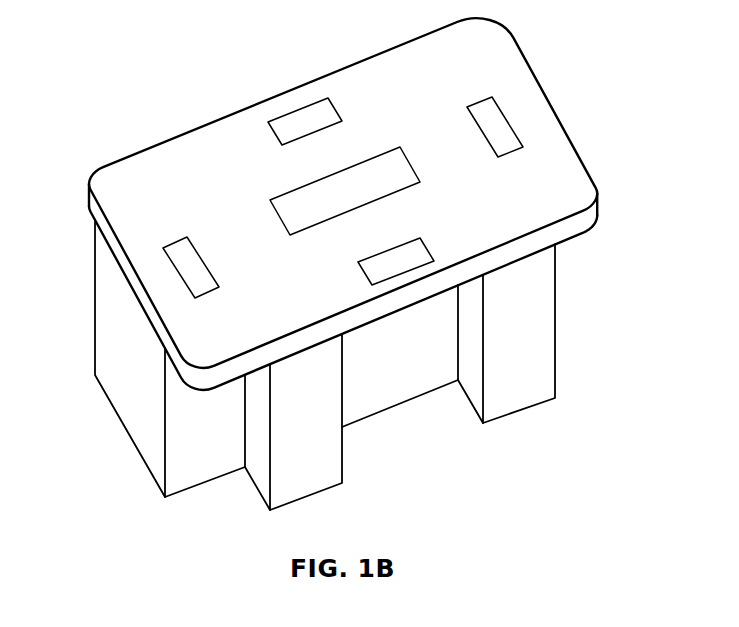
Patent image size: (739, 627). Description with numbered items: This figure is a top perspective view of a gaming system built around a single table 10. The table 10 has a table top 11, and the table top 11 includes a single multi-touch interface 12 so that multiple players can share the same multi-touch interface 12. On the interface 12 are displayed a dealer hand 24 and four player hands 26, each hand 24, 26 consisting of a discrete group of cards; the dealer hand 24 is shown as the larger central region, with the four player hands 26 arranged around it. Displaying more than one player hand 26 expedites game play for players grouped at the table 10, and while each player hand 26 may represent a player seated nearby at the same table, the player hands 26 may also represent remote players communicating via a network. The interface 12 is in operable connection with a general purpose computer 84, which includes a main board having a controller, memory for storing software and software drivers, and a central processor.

The table 10 is at (542, 20).
The table top 11 is at (479, 207).
The multi-touch interface 12 is at (392, 78).
The dealer hand 24 is at (400, 163).
The player hands 26 is at (298, 118).
The general purpose computer 84 is at (94, 305).